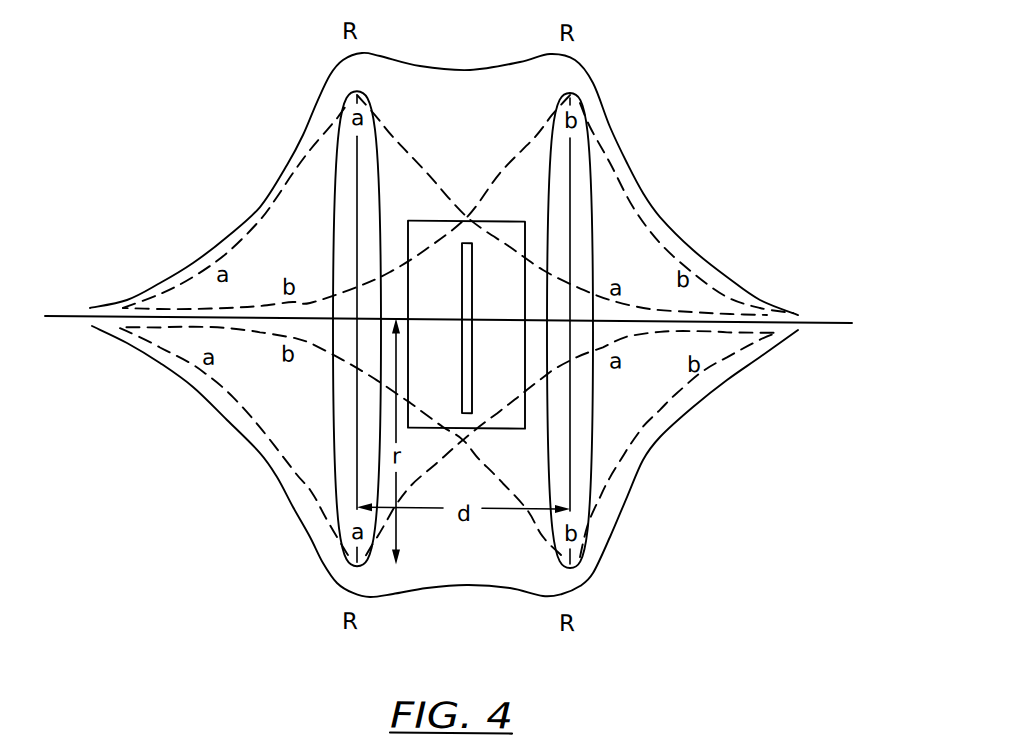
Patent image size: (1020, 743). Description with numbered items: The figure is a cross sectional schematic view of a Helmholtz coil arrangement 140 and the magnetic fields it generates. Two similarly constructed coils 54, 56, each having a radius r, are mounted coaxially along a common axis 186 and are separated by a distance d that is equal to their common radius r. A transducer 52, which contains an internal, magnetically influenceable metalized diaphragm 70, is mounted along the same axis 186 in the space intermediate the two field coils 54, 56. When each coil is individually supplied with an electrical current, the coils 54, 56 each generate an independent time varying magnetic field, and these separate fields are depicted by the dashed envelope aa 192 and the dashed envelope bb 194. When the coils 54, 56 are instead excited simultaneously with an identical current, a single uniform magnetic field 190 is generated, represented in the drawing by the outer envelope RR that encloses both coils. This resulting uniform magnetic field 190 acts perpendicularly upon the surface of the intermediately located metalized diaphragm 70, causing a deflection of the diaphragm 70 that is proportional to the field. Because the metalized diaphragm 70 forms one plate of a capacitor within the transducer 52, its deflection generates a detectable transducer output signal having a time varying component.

The Helmholtz coil arrangement 140 is at (762, 62).
The axis 186 is at (818, 321).
The uniform magnetic field 190 is at (298, 147).
The dashed envelope aa 192 is at (284, 198).
The dashed envelope bb 194 is at (638, 206).
The transducer 52 is at (452, 290).
The diaphragm 70 is at (473, 275).
The coil 54 is at (593, 427).
The coil 56 is at (337, 430).